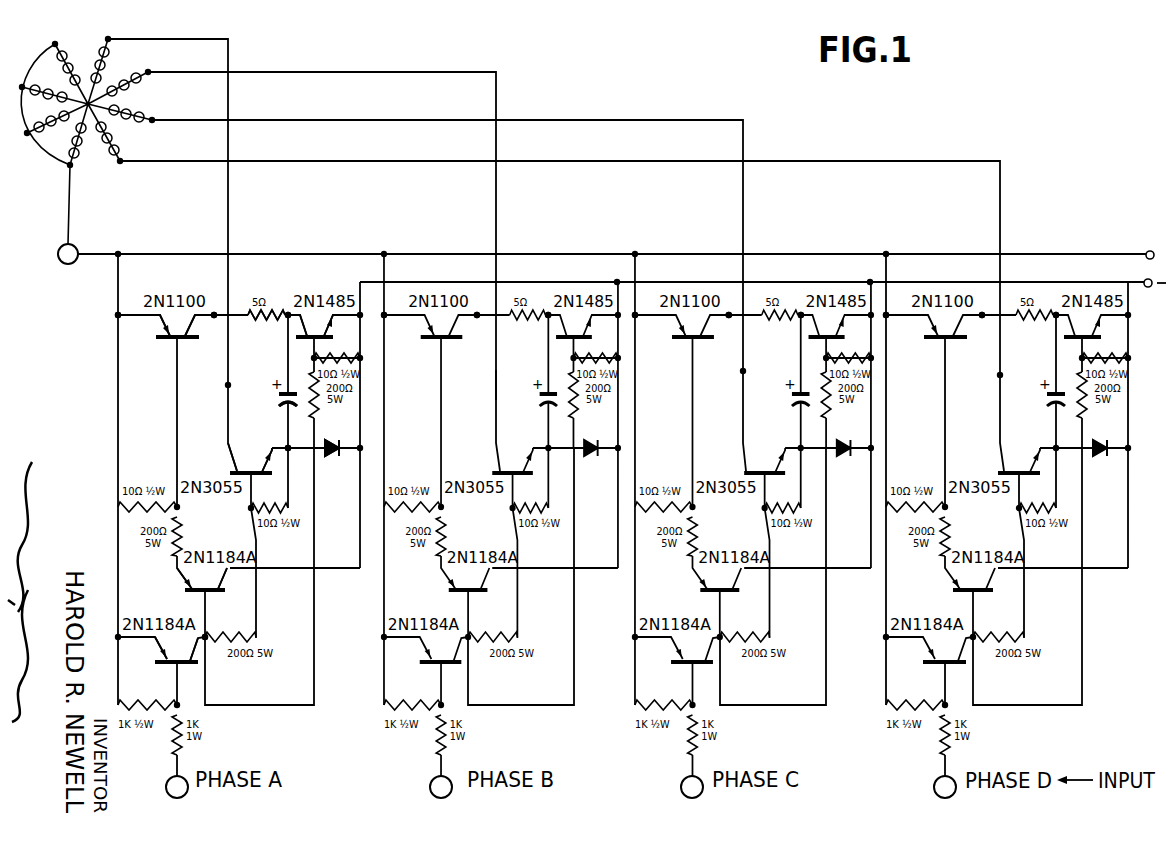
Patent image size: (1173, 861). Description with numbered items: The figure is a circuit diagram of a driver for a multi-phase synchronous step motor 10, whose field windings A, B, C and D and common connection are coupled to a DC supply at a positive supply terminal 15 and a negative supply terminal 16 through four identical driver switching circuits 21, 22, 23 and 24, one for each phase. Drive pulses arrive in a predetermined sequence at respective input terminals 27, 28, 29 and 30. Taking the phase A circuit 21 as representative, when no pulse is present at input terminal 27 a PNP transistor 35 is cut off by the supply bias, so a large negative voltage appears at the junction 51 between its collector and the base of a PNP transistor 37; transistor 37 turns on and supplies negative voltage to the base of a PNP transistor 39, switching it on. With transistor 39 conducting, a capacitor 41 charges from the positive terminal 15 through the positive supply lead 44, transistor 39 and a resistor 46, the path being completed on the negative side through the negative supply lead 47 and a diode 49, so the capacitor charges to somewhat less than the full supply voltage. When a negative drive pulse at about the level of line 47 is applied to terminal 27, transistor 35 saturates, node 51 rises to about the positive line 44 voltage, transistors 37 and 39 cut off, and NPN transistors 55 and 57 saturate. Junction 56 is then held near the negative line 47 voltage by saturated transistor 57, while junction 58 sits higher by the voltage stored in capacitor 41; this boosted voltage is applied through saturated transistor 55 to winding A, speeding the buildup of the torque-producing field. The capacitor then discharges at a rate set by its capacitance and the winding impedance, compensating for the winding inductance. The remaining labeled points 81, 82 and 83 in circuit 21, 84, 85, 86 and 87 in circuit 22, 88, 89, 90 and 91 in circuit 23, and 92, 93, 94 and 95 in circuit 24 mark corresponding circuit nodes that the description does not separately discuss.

The multi-phase synchronous step motor 10 is at (133, 30).
The positive supply terminal 15 is at (1146, 252).
The negative supply terminal 16 is at (1148, 288).
The driver switching circuit 21 is at (276, 711).
The driver switching circuit 22 is at (537, 711).
The driver switching circuit 23 is at (799, 711).
The driver switching circuit 24 is at (1052, 713).
The input terminal 27 is at (180, 797).
The input terminal 28 is at (450, 797).
The input terminal 29 is at (701, 797).
The input terminal 30 is at (952, 795).
The PNP transistor 35 is at (165, 663).
The PNP transistor 37 is at (182, 577).
The PNP transistor 39 is at (165, 338).
The capacitor 41 is at (278, 396).
The positive supply line 44 is at (318, 253).
The resistor 46 is at (262, 320).
The negative supply line 47 is at (405, 281).
The diode 49 is at (319, 433).
The junction 51 is at (207, 641).
The NPN transistor 55 is at (228, 458).
The junction 56 is at (288, 312).
The NPN transistor 57 is at (334, 321).
The junction 58 is at (292, 450).
The supply junction 81 is at (117, 317).
The collector junction 82 is at (213, 318).
The winding A connection 83 is at (227, 387).
The supply junction 84 is at (386, 318).
The collector junction 85 is at (477, 318).
The winding B connection 86 is at (496, 381).
The resistor junction 87 is at (548, 318).
The supply junction 88 is at (637, 318).
The collector junction 89 is at (729, 318).
The winding C connection 90 is at (746, 371).
The resistor junction 91 is at (800, 318).
The supply junction 92 is at (888, 318).
The collector junction 93 is at (982, 318).
The winding D connection 94 is at (1003, 375).
The resistor junction 95 is at (1056, 318).